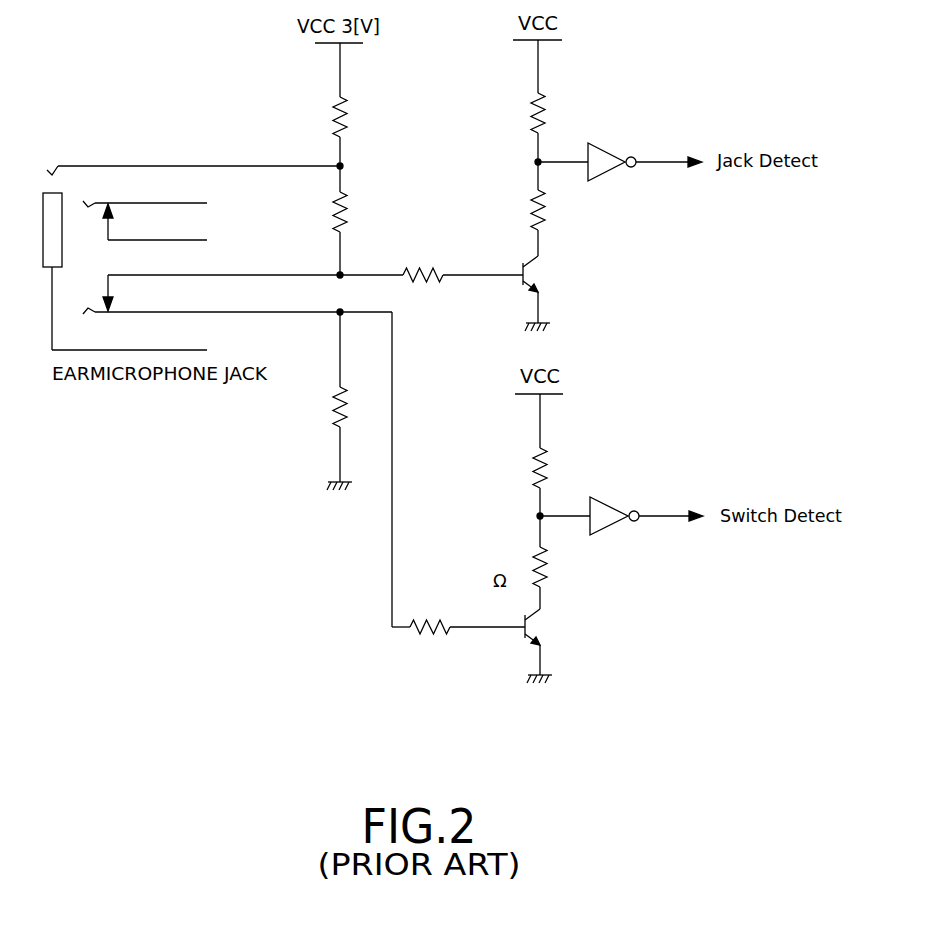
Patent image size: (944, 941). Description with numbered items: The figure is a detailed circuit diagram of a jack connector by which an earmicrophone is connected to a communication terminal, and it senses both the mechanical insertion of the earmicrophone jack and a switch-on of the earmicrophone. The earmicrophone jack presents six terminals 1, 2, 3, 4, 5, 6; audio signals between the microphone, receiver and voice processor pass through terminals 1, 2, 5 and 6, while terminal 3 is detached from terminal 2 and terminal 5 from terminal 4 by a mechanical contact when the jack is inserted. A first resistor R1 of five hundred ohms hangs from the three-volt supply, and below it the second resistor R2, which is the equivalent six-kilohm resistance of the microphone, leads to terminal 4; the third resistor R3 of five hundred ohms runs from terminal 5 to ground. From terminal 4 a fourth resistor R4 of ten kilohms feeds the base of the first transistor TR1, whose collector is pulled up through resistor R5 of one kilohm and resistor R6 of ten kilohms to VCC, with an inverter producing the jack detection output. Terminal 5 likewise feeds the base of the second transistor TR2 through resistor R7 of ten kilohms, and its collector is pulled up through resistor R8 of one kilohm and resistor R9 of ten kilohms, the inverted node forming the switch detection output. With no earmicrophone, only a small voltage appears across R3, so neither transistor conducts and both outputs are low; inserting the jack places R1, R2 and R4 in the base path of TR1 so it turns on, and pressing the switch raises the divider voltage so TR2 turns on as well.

The terminal 1 is at (193, 167).
The terminal 2 is at (145, 204).
The terminal 3 is at (155, 228).
The terminal 4 is at (253, 287).
The terminal 5 is at (237, 313).
The terminal 6 is at (129, 351).
The first resistor R1 is at (396, 117).
The second resistor R2 is at (427, 224).
The third resistor R3 is at (287, 407).
The fourth resistor R4 is at (439, 284).
The resistor R5 is at (592, 210).
The resistor R6 is at (596, 113).
The resistor R7 is at (441, 638).
The resistor R8 is at (594, 567).
The resistor R9 is at (598, 468).
The first transistor TR1 is at (551, 274).
The second transistor TR2 is at (554, 627).